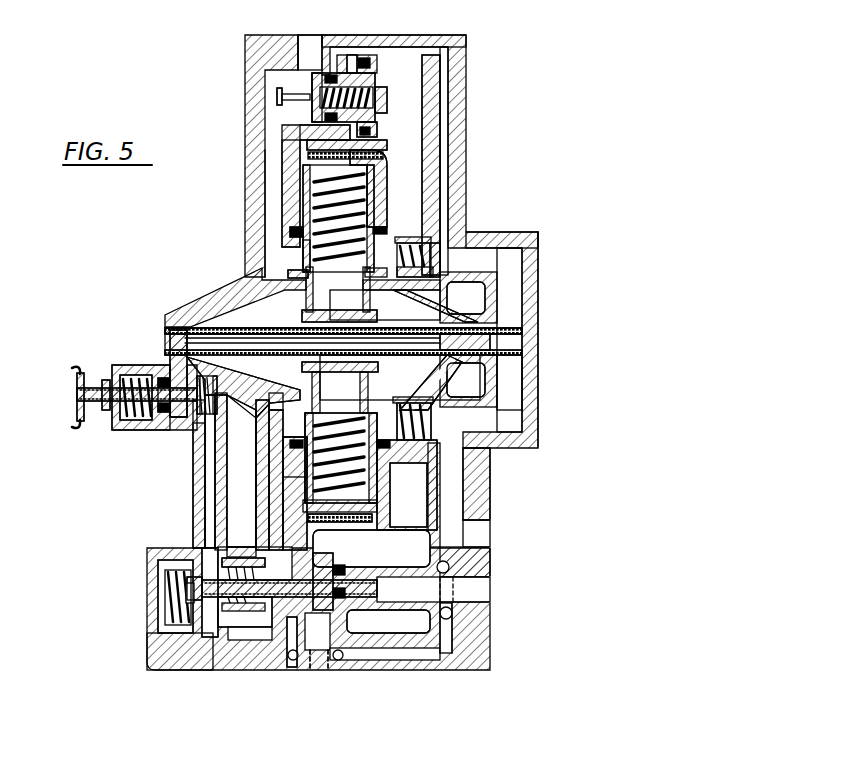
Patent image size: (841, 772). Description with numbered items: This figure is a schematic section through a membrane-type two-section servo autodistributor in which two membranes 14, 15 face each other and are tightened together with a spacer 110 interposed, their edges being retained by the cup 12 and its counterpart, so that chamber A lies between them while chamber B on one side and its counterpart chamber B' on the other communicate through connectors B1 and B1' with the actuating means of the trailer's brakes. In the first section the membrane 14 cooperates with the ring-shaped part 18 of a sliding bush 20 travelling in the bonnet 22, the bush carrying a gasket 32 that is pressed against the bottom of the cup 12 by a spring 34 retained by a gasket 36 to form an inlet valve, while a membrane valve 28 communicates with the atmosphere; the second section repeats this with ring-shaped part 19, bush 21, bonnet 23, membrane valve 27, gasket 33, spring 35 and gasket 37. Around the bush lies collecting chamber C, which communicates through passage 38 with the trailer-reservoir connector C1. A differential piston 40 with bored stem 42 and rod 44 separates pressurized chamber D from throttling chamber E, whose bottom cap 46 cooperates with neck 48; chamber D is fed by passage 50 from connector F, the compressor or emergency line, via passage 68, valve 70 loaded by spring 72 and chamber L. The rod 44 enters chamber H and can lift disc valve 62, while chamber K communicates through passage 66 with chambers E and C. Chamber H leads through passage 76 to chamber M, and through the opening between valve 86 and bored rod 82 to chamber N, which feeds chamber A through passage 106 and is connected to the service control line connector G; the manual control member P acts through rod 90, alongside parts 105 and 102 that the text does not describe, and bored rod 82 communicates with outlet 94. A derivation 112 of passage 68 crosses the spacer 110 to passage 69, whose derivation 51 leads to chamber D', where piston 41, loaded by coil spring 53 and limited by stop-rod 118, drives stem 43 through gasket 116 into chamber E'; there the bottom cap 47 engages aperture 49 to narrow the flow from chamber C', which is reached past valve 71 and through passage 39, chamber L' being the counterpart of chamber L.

The aperture 49 is at (297, 66).
The chamber C' is at (306, 123).
The chamber D' is at (362, 37).
The piston 41 is at (367, 70).
The derivation 51 is at (428, 52).
The valve 70 is at (496, 0).
The chamber L is at (457, 263).
The spring 72 is at (546, 0).
The bottom cap 47 is at (310, 80).
The stop-rod 118 is at (277, 95).
The chamber E' is at (278, 133).
The gasket 116 is at (284, 142).
The passage 39 is at (270, 172).
The gasket 37 is at (290, 231).
The spring 35 is at (303, 252).
The gasket 33 is at (288, 272).
The chamber A is at (223, 335).
The passage 106 is at (240, 334).
The collar 105 is at (104, 382).
The chamber N is at (178, 372).
The control member P is at (78, 372).
The outlet 94 is at (78, 395).
The guide body 102 is at (104, 413).
The rod 90 is at (137, 417).
The bored rod 82 is at (185, 415).
The valve 86 is at (190, 432).
The passage 76 is at (210, 486).
The pressurized chamber D is at (188, 471).
The disc valve 62 is at (180, 578).
The chamber H is at (210, 573).
The chamber K is at (163, 570).
The passage 66 is at (180, 635).
The rod 44 is at (211, 600).
The piston 40 is at (262, 612).
The throttling chamber E is at (290, 659).
The connector C1 is at (330, 648).
The passage 50 is at (390, 655).
The bored stem 42 is at (377, 597).
The bottom cap 46 is at (340, 563).
The membrane valve 28 is at (340, 528).
The bonnet 22 is at (390, 507).
The sliding bush 20 is at (376, 487).
The neck 48 is at (293, 565).
The passage 38 is at (274, 503).
The spring 34 is at (298, 470).
The collecting chamber C is at (255, 475).
The cup 12 is at (241, 471).
The gasket 32 is at (297, 410).
The chamber M is at (220, 372).
The ring-shaped part 18 is at (303, 373).
The gasket 36 is at (320, 414).
The passage 68 is at (485, 483).
The connector F is at (481, 534).
The connector G is at (481, 592).
The chamber B is at (400, 377).
The membrane 14 is at (448, 355).
The chamber B' is at (385, 305).
The chamber L' is at (435, 307).
The membrane 15 is at (258, 328).
The ring-shaped part 19 is at (302, 314).
The coil spring 53 is at (387, 96).
The stem 43 is at (378, 120).
The membrane valve 27 is at (350, 152).
The bonnet 23 is at (392, 163).
The sliding bush 21 is at (392, 187).
The valve 71 is at (466, 231).
The passage 69 is at (487, 256).
The connector B1' is at (547, 269).
The spacer 110 is at (538, 342).
The connector B1 is at (558, 384).
The derivation 112 is at (512, 400).